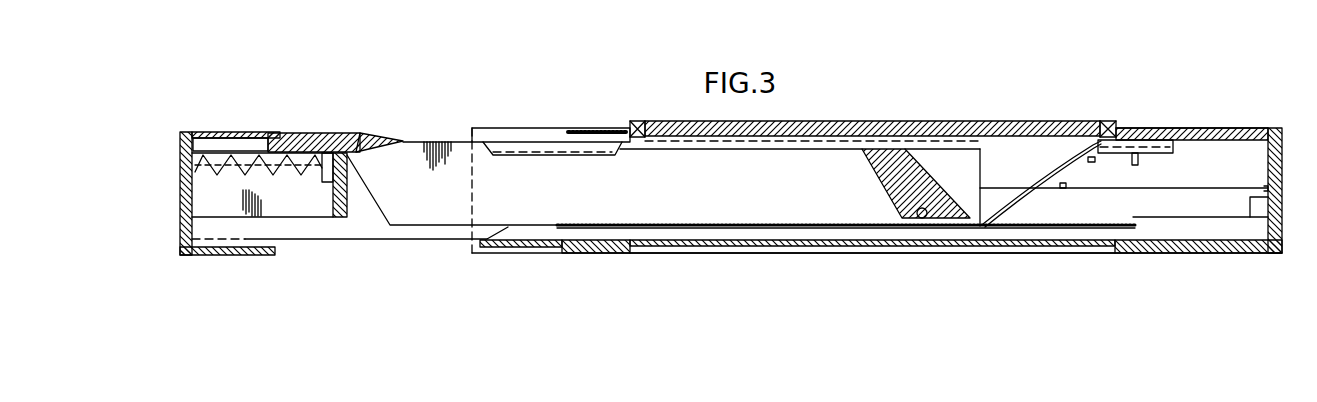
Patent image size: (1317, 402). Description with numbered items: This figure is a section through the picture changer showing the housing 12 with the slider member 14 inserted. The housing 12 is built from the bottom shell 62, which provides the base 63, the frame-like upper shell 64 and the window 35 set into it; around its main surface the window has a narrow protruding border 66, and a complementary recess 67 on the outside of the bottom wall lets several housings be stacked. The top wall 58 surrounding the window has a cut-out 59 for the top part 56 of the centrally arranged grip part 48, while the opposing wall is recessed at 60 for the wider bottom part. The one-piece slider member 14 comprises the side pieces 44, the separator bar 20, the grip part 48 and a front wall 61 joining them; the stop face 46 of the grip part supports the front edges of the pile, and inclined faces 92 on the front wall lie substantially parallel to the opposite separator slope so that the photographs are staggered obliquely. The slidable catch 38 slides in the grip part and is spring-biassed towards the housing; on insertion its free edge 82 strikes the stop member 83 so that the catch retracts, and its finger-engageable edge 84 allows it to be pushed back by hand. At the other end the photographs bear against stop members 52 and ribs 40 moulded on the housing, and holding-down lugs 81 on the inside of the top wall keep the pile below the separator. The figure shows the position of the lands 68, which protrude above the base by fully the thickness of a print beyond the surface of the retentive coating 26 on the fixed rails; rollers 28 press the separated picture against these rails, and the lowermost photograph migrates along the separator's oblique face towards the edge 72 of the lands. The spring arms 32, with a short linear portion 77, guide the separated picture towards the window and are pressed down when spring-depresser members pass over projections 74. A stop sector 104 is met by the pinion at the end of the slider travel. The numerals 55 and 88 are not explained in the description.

The housing 12 is at (1204, 128).
The slider member 14 is at (314, 251).
The separator bar 20 is at (923, 178).
The retentive coating 26 is at (738, 224).
The rollers 28 is at (893, 201).
The spring arms 32 is at (1032, 213).
The window 35 is at (871, 125).
The slidable catch 38 is at (300, 133).
The ribs 40 is at (1150, 140).
The side pieces 44 is at (425, 142).
The stop face 46 is at (352, 190).
The grip part 48 is at (205, 132).
The stop members 52 is at (1123, 167).
The section line 55 is at (458, 141).
The top part 56 is at (250, 130).
The top wall 58 is at (1243, 128).
The cut-out 59 is at (545, 128).
The recess 60 is at (528, 249).
The front wall 61 is at (180, 205).
The bottom shell 62 is at (1216, 254).
The base 63 is at (750, 254).
The upper shell 64 is at (1160, 138).
The border 66 is at (637, 121).
The recess 67 is at (884, 254).
The lands 68 is at (1195, 217).
The edge 72 is at (1137, 216).
The projections 74 is at (1066, 186).
The linear portion 77 is at (1103, 128).
The holding-down lugs 81 is at (541, 157).
The free edge 82 is at (403, 141).
The stop member 83 is at (612, 148).
The finger-engageable edge 84 is at (365, 134).
The end cap 88 is at (1283, 153).
The inclined faces 92 is at (374, 190).
The stop sector 104 is at (1247, 198).